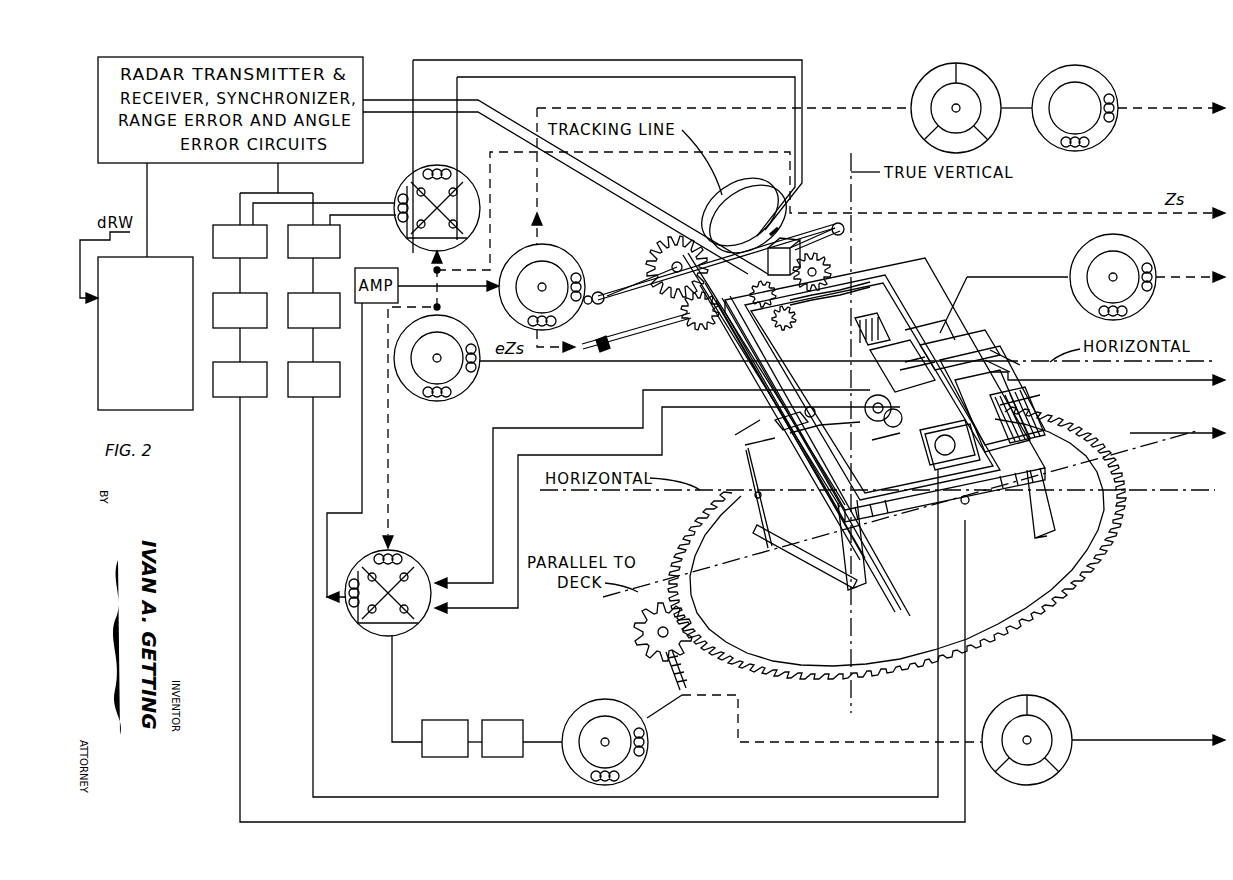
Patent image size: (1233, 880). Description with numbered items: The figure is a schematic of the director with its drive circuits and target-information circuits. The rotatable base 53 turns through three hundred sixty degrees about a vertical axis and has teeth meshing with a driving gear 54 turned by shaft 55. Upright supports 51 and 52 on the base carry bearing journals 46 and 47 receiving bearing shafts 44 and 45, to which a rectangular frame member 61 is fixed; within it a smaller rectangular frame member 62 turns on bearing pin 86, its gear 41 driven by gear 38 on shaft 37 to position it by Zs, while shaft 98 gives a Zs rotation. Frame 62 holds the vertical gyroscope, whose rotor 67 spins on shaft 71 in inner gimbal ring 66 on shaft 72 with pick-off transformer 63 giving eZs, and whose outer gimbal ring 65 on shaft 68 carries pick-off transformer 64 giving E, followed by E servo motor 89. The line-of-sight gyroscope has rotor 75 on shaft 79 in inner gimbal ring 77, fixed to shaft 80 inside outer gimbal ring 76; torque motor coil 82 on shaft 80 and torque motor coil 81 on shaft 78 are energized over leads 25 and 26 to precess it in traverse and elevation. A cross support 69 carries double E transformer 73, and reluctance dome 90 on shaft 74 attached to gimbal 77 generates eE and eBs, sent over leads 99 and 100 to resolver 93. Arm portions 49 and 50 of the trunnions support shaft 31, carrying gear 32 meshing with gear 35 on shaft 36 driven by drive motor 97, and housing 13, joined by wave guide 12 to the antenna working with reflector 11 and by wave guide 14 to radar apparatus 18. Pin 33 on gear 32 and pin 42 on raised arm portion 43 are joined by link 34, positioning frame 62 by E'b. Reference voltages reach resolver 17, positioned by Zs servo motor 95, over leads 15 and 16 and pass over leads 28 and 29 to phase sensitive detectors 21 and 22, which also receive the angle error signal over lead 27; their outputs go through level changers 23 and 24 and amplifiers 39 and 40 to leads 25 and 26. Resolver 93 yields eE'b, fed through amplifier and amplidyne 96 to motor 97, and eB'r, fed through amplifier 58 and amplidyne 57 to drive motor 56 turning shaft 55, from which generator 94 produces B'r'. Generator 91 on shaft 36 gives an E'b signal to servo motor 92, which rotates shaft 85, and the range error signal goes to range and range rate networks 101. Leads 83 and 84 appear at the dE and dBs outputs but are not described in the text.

The reflector 11 is at (722, 205).
The wave guide 12 is at (762, 230).
The housing for scanning mechanism 13 is at (765, 262).
The wave guide 14 is at (600, 178).
The lead 15 is at (802, 60).
The lead 16 is at (795, 90).
The resolver 17 is at (448, 168).
The radar apparatus 18 is at (218, 163).
The phase sensitive detector 21 is at (228, 225).
The phase sensitive detector 22 is at (340, 240).
The level changer 23 is at (236, 293).
The level changer 24 is at (308, 293).
The lead 25 is at (240, 428).
The lead 26 is at (313, 422).
The lead 27 is at (278, 182).
The lead 28 is at (330, 203).
The lead 29 is at (350, 215).
The shaft 31 is at (665, 296).
The gear 32 is at (668, 244).
The pin 33 is at (670, 262).
The link 34 is at (708, 320).
The gear 35 is at (692, 322).
The shaft 36 is at (628, 336).
The shaft 37 is at (825, 250).
The gear 38 is at (835, 270).
The amplifier 39 is at (236, 362).
The amplifier 40 is at (310, 362).
The gear 41 is at (765, 290).
The pin 42 is at (790, 400).
The raised arm portion 43 is at (745, 428).
The bearing shaft 44 is at (755, 442).
The bearing shaft 45 is at (995, 352).
The bearing journal 46 is at (758, 462).
The bearing journal 47 is at (1000, 362).
The extended arm portion 49 is at (596, 306).
The extended arm portion 50 is at (802, 236).
The upright support 51 is at (800, 570).
The upright support 52 is at (1000, 370).
The rotatable base 53 is at (830, 668).
The driving gear 54 is at (652, 618).
The shaft 55 is at (686, 670).
The drive motor 56 is at (605, 700).
The amplidyne 57 is at (496, 720).
The amplifier 58 is at (440, 720).
The rectangular frame member 61 is at (890, 290).
The second rectangular frame member 62 is at (900, 340).
The pick-off transformer 63 is at (920, 357).
The pick-off transformer 64 is at (932, 362).
The outer gimbal ring 65 is at (790, 392).
The inner gimbal ring 66 is at (800, 327).
The rotor 67 is at (945, 320).
The shaft 68 is at (770, 378).
The cross support 69 is at (800, 426).
The shaft 71 is at (872, 318).
The shaft 72 is at (950, 350).
The double E transformer 73 is at (830, 430).
The shaft 74 is at (885, 442).
The gyro rotor 75 is at (850, 520).
The outer gimbal ring 76 is at (1005, 420).
The inner gimbal ring 77 is at (945, 470).
The shaft 78 is at (1025, 402).
The shaft 79 is at (940, 468).
The shaft 80 is at (870, 518).
The torque motor coil 81 is at (990, 386).
The torque motor coil 82 is at (1030, 440).
The lead 83 is at (1105, 382).
The lead 84 is at (1130, 433).
The shaft 85 is at (1166, 105).
The bearing pin 86 is at (968, 504).
The E servo motor 89 is at (1146, 250).
The reluctance dome 90 is at (882, 420).
The generator 91 is at (936, 72).
The servo motor 92 is at (1050, 72).
The resolver 93 is at (410, 560).
The generator 94 is at (1040, 700).
The Zs servo motor 95 is at (468, 390).
The amplifier and amplidyne 96 is at (425, 268).
The drive motor 97 is at (545, 244).
The shaft 98 is at (1032, 213).
The lead 99 is at (493, 487).
The lead 100 is at (518, 507).
The range and range rate networks 101 is at (155, 270).